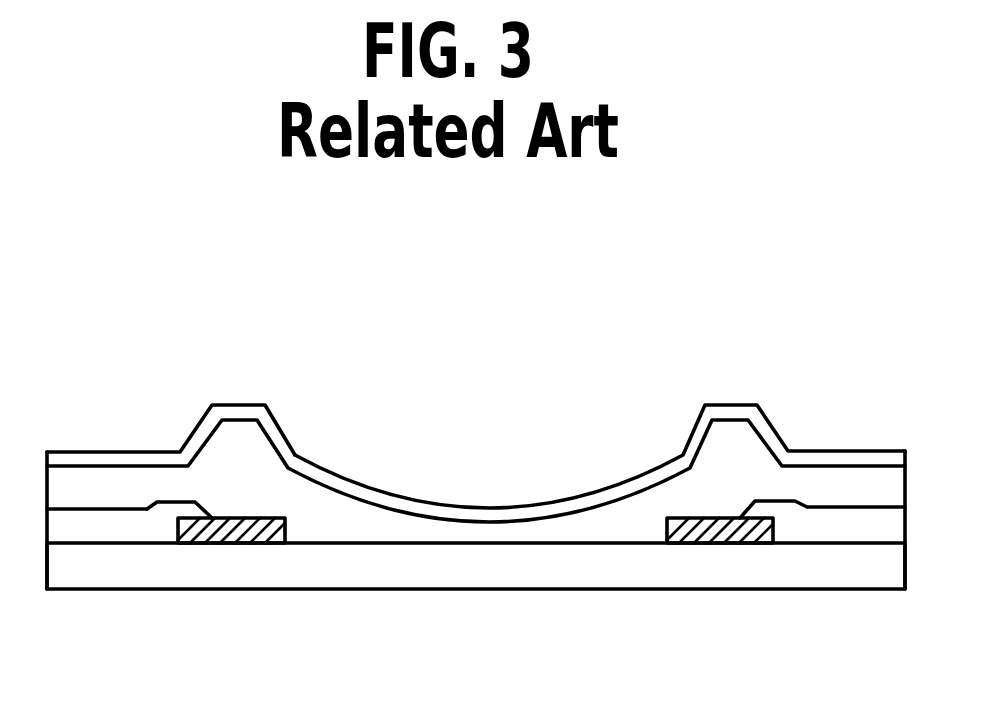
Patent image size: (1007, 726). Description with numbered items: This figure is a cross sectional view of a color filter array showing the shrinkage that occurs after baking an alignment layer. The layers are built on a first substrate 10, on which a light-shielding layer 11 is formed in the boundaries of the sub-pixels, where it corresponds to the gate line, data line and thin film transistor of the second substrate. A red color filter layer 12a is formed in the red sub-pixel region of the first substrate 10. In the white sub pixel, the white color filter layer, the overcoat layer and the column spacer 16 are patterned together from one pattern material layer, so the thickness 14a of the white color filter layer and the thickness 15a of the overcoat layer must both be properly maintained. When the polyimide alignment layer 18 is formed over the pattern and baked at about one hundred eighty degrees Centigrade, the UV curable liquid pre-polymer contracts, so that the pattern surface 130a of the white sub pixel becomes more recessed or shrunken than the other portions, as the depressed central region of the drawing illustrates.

The first substrate 10 is at (517, 564).
The light-shielding layer 11 is at (250, 530).
The red color filter layer 12a is at (108, 530).
The thickness of white color filter layer 14a is at (378, 517).
The thickness of overcoat layer 15a is at (258, 510).
The column spacer 16 is at (171, 388).
The alignment layer 18 is at (768, 433).
The pattern surface of white sub pixel 130a is at (241, 392).